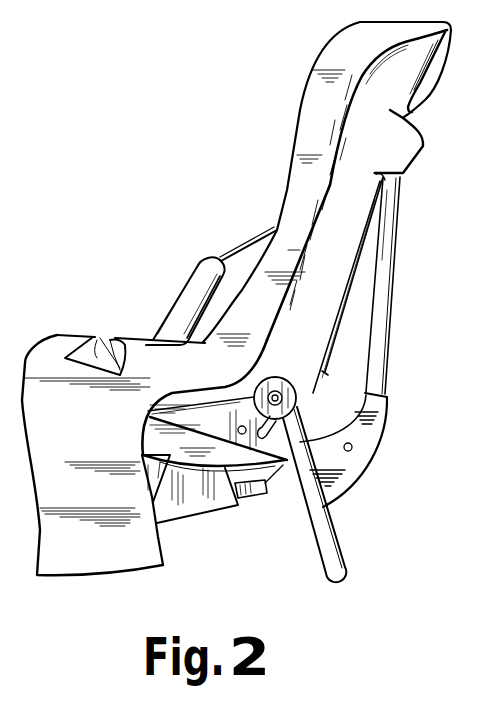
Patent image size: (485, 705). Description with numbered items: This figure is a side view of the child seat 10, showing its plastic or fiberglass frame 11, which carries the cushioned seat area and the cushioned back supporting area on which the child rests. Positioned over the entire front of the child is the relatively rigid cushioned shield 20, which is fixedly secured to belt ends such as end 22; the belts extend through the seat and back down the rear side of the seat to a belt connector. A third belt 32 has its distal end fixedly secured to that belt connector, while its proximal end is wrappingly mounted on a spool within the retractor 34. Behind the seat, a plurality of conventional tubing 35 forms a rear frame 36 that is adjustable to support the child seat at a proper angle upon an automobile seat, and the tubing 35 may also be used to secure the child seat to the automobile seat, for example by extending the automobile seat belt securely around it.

The child seat 10 is at (0, 32).
The frame 11 is at (342, 38).
The shield 20 is at (192, 290).
The end of belt 22 is at (248, 245).
The third belt 32 is at (278, 482).
The retractor 34 is at (228, 502).
The tubing 35 is at (395, 247).
The rear frame 36 is at (372, 460).